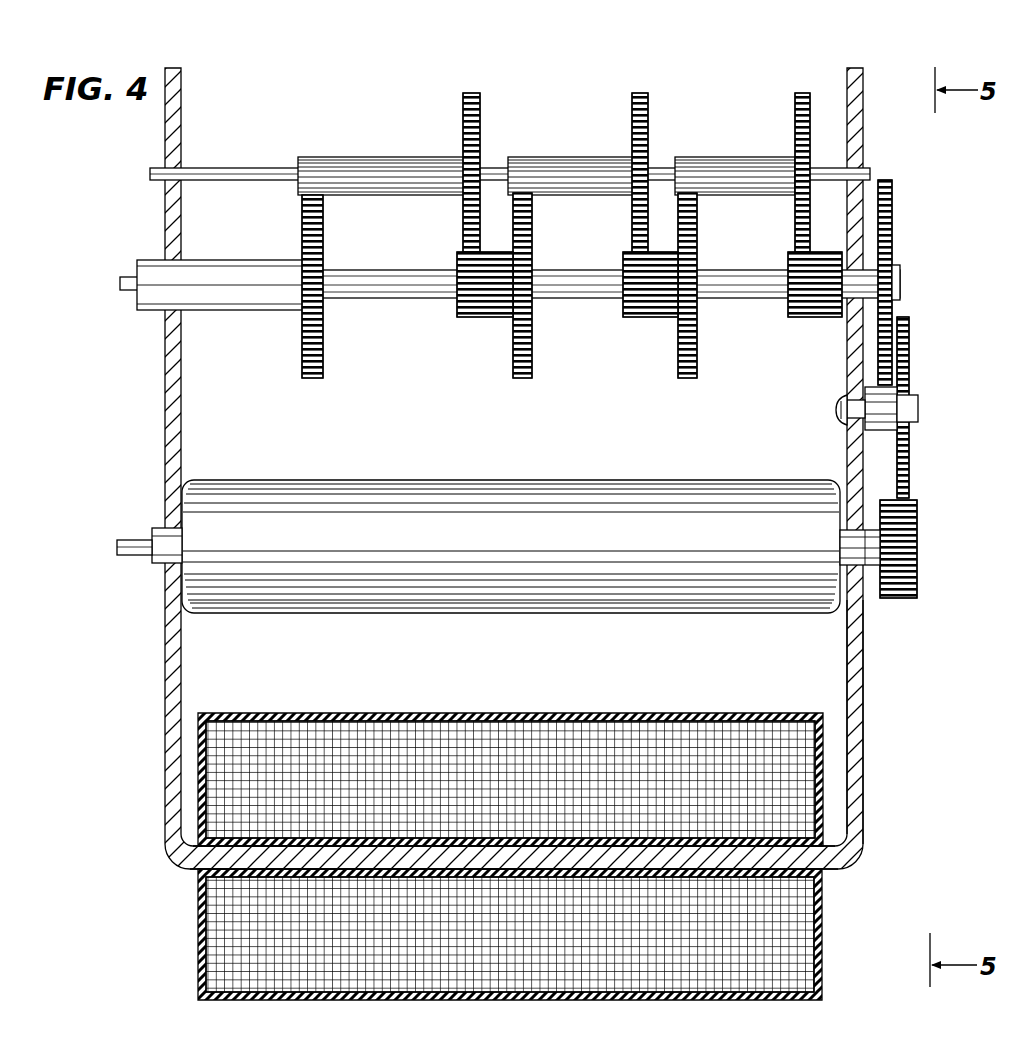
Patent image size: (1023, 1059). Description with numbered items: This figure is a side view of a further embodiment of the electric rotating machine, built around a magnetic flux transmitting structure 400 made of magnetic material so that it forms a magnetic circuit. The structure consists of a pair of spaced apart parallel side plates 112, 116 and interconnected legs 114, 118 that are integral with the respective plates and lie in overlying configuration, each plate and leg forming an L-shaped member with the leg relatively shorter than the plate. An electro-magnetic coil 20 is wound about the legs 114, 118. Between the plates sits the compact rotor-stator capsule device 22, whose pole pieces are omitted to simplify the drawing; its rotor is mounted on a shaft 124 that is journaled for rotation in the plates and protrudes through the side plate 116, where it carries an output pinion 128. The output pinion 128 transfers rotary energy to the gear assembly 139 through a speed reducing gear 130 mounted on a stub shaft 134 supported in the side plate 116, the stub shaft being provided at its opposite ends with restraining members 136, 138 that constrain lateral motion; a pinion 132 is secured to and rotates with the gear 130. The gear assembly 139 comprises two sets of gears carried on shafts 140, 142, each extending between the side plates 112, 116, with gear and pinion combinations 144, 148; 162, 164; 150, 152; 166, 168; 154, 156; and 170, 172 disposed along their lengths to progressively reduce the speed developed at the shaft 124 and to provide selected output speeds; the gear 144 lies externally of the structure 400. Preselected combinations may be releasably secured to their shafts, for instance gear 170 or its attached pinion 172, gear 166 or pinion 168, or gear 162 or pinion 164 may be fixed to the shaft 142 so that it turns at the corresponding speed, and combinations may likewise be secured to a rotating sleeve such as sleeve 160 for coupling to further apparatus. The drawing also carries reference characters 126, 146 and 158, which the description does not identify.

The magnetic flux transmitting structure 400 is at (158, 128).
The gear assembly 139 is at (540, 111).
The side plate 112 is at (165, 402).
The side plate 116 is at (864, 690).
The interconnecting leg 114 is at (200, 870).
The interconnecting leg 118 is at (772, 870).
The electro-magnetic coil 20 is at (287, 713).
The compact rotor-stator capsule device 22 is at (640, 544).
The shaft 124 is at (160, 563).
The shaft stub 126 is at (133, 538).
The output pinion 128 is at (918, 520).
The speed reducing gear 130 is at (911, 352).
The pinion 132 is at (875, 432).
The stub shaft 134 is at (855, 398).
The restraining member 136 is at (838, 415).
The restraining member 138 is at (919, 410).
The shaft 140 is at (570, 299).
The shaft 142 is at (497, 167).
The gear 144 is at (893, 240).
The shaft end 146 is at (901, 290).
The pinion 148 is at (800, 318).
The gear 150 is at (697, 378).
The pinion 152 is at (623, 317).
The gear 154 is at (525, 379).
The pinion 156 is at (462, 318).
The gear 158 is at (313, 379).
The sleeve 160 is at (238, 310).
The gear 162 is at (796, 97).
The pinion 164 is at (765, 157).
The gear 166 is at (651, 90).
The pinion 168 is at (602, 157).
The gear 170 is at (465, 96).
The pinion 172 is at (393, 157).